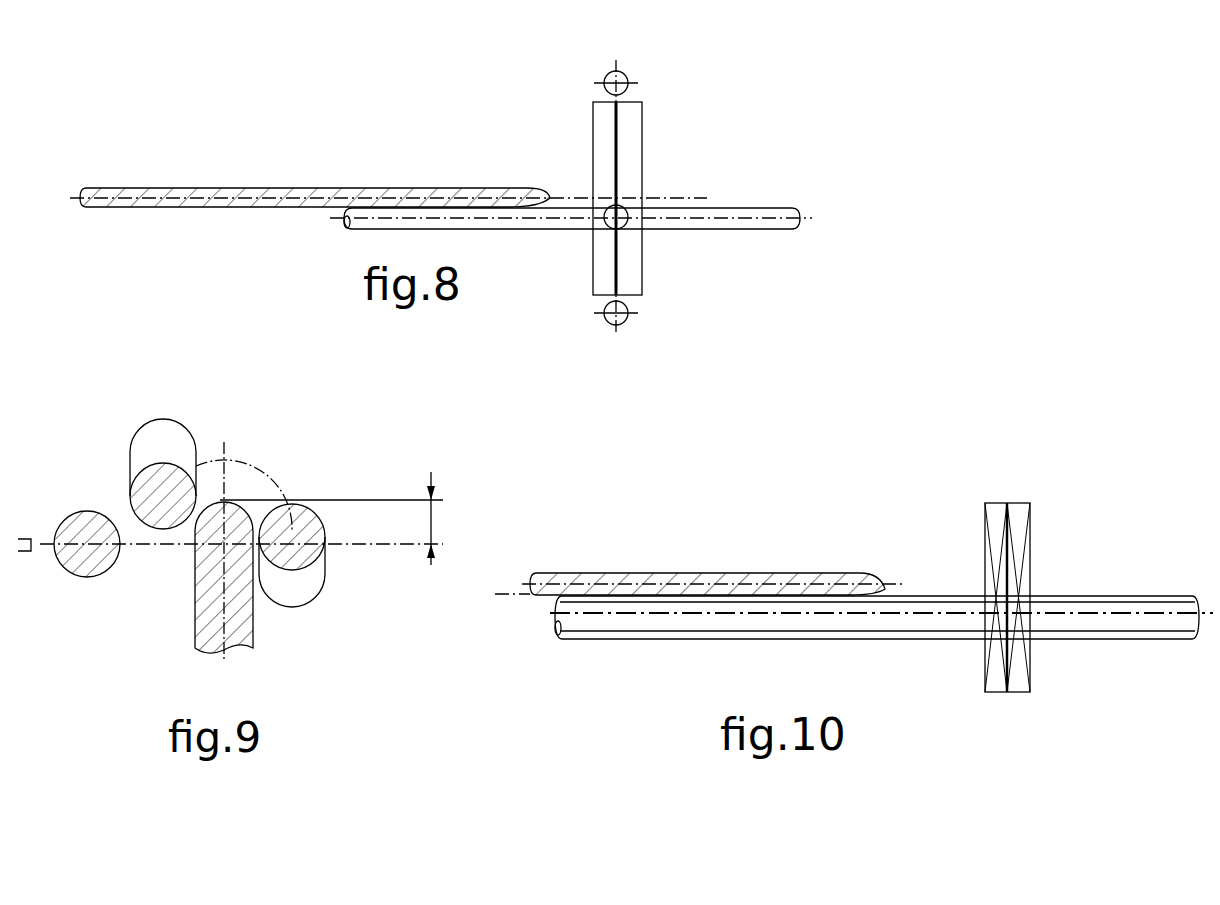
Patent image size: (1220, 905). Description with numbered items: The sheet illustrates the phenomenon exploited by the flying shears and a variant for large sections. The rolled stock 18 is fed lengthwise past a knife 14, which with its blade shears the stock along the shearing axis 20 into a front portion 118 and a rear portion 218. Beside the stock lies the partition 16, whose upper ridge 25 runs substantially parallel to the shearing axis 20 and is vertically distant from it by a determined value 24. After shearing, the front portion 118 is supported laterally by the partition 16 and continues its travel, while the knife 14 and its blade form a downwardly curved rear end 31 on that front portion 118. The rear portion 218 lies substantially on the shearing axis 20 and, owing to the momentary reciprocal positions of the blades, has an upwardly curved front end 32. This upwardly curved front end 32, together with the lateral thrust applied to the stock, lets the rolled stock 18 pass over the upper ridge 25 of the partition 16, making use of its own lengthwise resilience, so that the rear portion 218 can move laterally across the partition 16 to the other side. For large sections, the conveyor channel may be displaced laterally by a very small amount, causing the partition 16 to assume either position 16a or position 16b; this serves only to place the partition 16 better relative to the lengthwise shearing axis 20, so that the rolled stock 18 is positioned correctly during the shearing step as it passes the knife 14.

In FIG. 8, the knife 14 is at (633, 133).
In FIG. 10, the knife 14 is at (1008, 530).
In FIG. 8, the partition 16 is at (423, 182).
In FIG. 9, the partition 16 is at (246, 614).
In FIG. 10, the partition position 16a is at (730, 578).
In FIG. 10, the partition position 16b is at (822, 613).
In FIG. 8, the rolled stock 18 is at (745, 223).
In FIG. 10, the rolled stock 18 is at (922, 622).
In FIG. 8, the shearing axis 20 is at (687, 197).
In FIG. 9, the shearing axis 20 is at (360, 543).
In FIG. 10, the shearing axis 20 is at (1215, 592).
In FIG. 9, the determined value 24 is at (432, 522).
In FIG. 8, the upper ridge 25 is at (359, 197).
In FIG. 9, the upper ridge 25 is at (236, 484).
In FIG. 9, the downwardly curved rear end 31 is at (297, 585).
In FIG. 9, the upwardly curved front end 32 is at (166, 435).
In FIG. 9, the front portion 118 is at (303, 555).
In FIG. 9, the rear portion 218 is at (97, 567).